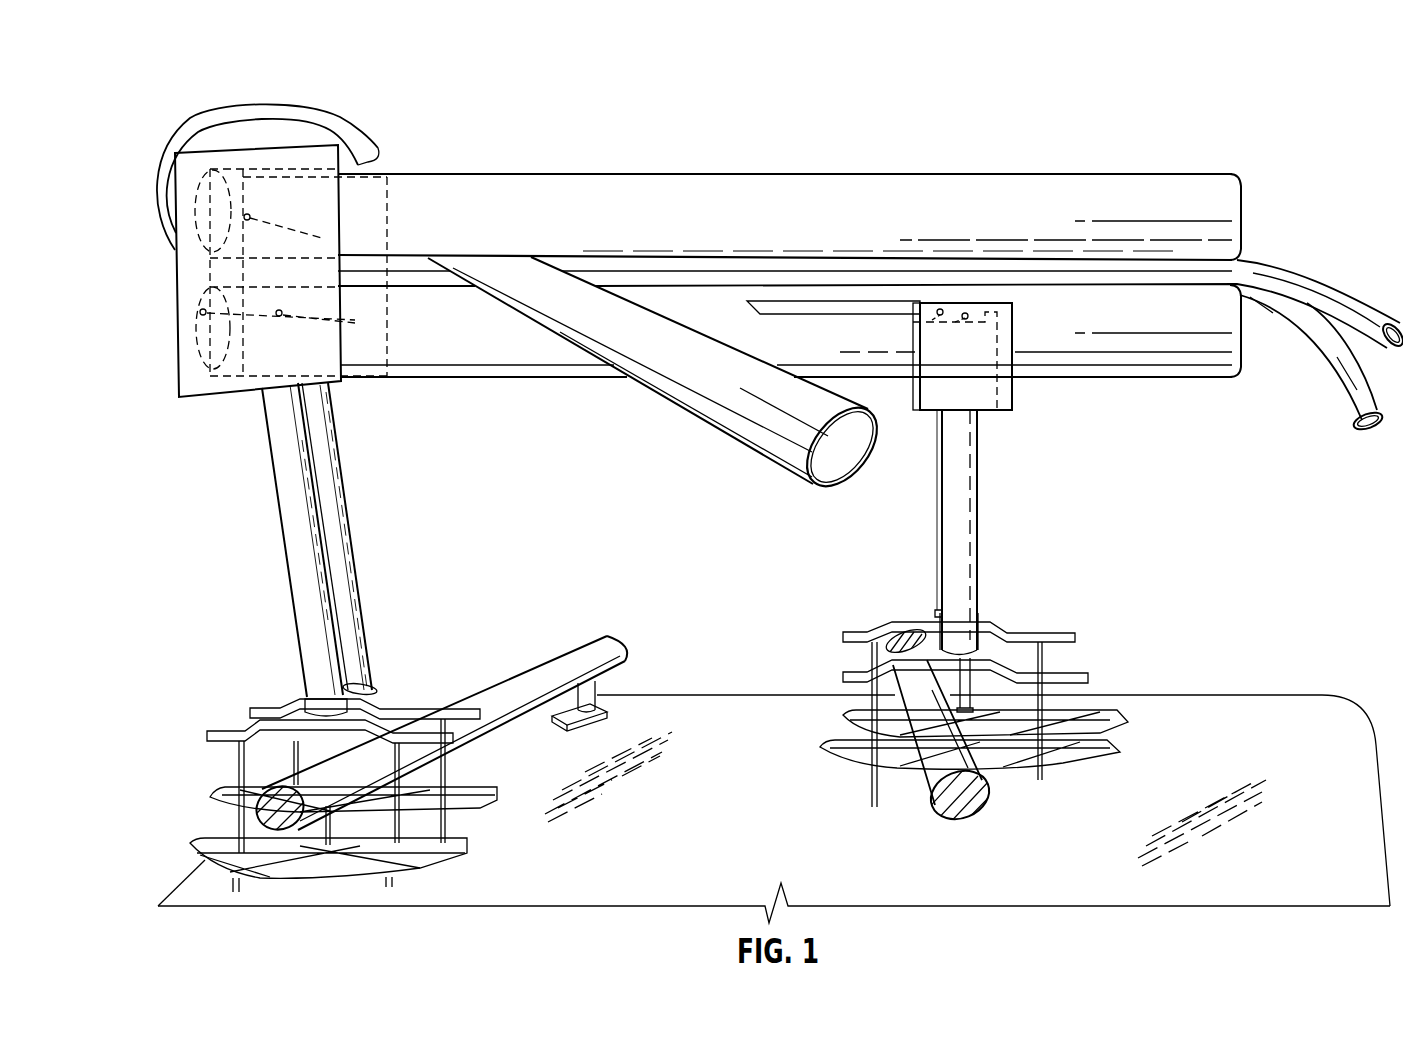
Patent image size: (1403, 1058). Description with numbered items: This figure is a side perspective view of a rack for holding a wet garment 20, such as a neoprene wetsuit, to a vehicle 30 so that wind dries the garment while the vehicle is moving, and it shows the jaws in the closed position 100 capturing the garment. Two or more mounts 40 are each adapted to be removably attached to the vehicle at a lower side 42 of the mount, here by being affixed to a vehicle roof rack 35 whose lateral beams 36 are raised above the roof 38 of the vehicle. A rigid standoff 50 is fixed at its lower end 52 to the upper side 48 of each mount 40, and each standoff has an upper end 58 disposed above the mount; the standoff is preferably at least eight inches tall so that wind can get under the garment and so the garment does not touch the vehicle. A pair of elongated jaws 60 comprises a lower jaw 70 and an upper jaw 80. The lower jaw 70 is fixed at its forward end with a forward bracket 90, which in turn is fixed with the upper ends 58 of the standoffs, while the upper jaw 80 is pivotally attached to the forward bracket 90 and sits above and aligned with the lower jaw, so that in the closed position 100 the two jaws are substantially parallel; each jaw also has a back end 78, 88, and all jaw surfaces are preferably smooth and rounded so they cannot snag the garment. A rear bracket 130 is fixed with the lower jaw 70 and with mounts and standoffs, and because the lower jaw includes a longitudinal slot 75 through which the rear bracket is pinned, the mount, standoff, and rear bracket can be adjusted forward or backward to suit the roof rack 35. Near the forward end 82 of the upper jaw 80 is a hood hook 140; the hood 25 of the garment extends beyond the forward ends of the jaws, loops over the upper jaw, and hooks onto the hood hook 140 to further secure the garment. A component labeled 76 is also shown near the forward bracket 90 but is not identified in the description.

The closed position 100 is at (1276, 77).
The wet garment 20 is at (1273, 260).
The hood 25 is at (212, 107).
The vehicle 30 is at (752, 667).
The vehicle roof rack 35 is at (650, 636).
The lateral beams 36 is at (545, 668).
The roof 38 is at (727, 816).
The mount 40 is at (186, 743).
The lower side 42 is at (458, 776).
The upper side 48 is at (400, 702).
The rigid standoff 50 is at (307, 560).
The lower end 52 is at (320, 688).
The upper end 58 is at (277, 407).
The pair of elongated jaws 60 is at (1240, 391).
The lower jaw 70 is at (873, 360).
The longitudinal slot 75 is at (827, 307).
The housing 76 is at (207, 338).
The back end 78 is at (1230, 330).
The upper jaw 80 is at (798, 188).
The forward end 82 is at (233, 168).
The back end 88 is at (1232, 203).
The forward bracket 90 is at (298, 192).
The rear bracket 130 is at (1012, 380).
The hood hook 140 is at (355, 142).